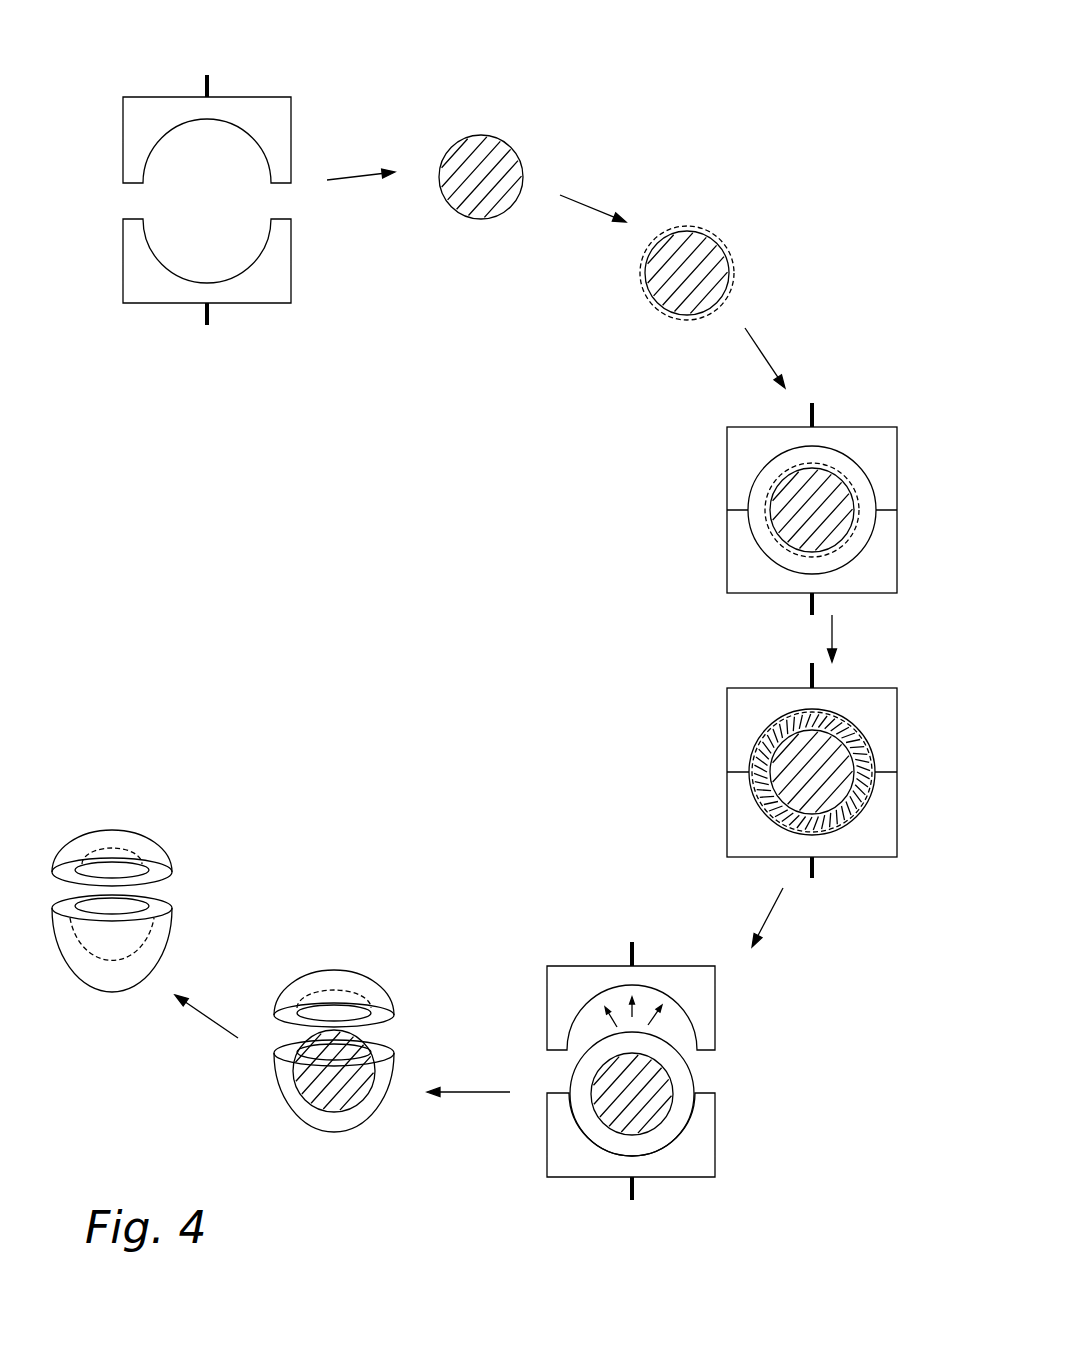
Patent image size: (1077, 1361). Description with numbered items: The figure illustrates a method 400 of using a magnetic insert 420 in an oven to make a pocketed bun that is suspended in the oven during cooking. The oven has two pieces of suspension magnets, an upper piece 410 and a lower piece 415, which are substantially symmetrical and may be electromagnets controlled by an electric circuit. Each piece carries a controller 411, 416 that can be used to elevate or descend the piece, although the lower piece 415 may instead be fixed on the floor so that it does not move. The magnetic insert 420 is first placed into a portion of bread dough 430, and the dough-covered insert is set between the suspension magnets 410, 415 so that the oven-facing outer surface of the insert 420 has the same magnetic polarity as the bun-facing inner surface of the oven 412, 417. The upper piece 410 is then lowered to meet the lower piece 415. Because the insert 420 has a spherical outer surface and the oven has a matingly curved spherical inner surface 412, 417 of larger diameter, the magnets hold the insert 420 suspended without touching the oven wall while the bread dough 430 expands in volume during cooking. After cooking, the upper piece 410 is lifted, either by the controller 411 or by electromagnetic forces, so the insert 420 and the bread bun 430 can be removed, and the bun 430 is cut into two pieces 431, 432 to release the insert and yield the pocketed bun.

The method of forming an encapsulated sphere 400 is at (845, 77).
The upper piece 410 is at (137, 97).
The controller 411 is at (208, 87).
The inner surface of the oven 412 is at (755, 482).
The lower piece 415 is at (132, 303).
The controller 416 is at (207, 325).
The inner surface of the oven 417 is at (748, 520).
The magnetic insert 420 is at (483, 135).
The bread dough 430 is at (690, 232).
The piece 431 is at (158, 843).
The piece 432 is at (173, 950).